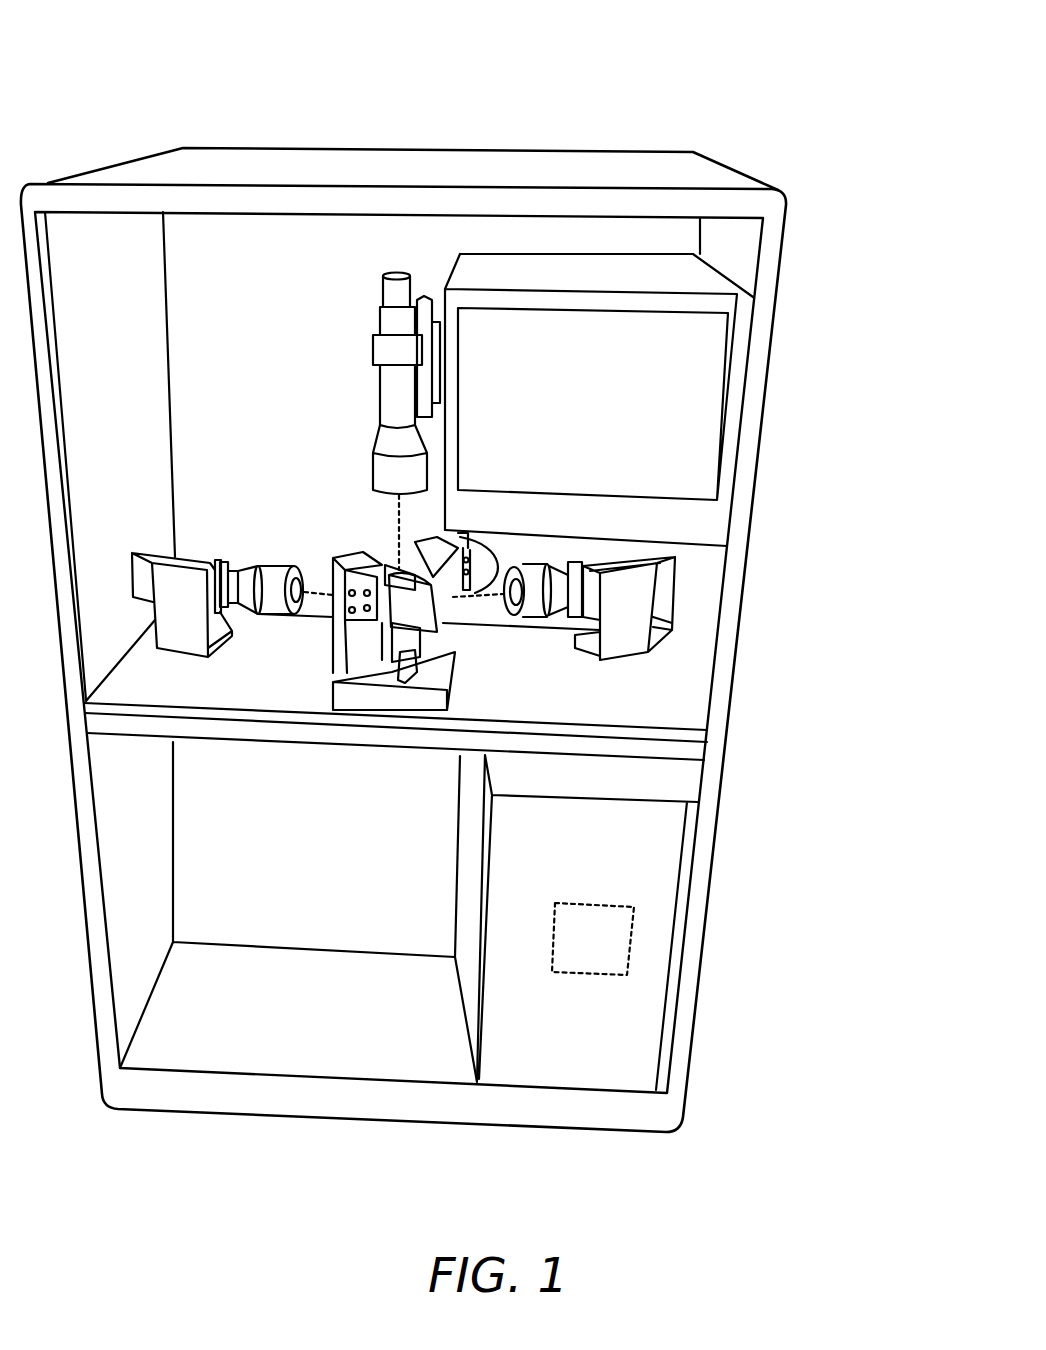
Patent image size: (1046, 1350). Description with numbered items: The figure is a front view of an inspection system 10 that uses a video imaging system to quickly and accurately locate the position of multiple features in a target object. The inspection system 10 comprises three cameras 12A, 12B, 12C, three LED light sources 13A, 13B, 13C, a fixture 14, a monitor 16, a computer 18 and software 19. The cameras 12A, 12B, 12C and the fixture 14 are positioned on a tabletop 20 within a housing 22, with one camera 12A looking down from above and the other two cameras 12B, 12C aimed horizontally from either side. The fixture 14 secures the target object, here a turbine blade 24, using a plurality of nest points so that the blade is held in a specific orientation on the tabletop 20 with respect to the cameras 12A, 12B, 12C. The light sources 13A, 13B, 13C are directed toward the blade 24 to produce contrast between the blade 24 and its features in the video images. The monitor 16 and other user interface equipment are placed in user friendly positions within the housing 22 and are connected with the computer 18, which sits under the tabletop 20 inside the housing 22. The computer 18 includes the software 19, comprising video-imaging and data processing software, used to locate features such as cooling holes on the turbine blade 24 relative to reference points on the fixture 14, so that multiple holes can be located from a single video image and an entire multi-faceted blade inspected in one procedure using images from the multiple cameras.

The inspection system 10 is at (759, 132).
The camera 12A is at (393, 473).
The camera 12B is at (274, 600).
The camera 12C is at (533, 605).
The LED light source 13A is at (373, 350).
The LED light source 13B is at (190, 557).
The LED light source 13C is at (623, 560).
The fixture 14 is at (392, 705).
The monitor 16 is at (697, 388).
The computer 18 is at (660, 853).
The software 19 is at (630, 947).
The tabletop 20 is at (680, 712).
The housing 22 is at (708, 797).
The turbine blade 24 is at (472, 590).